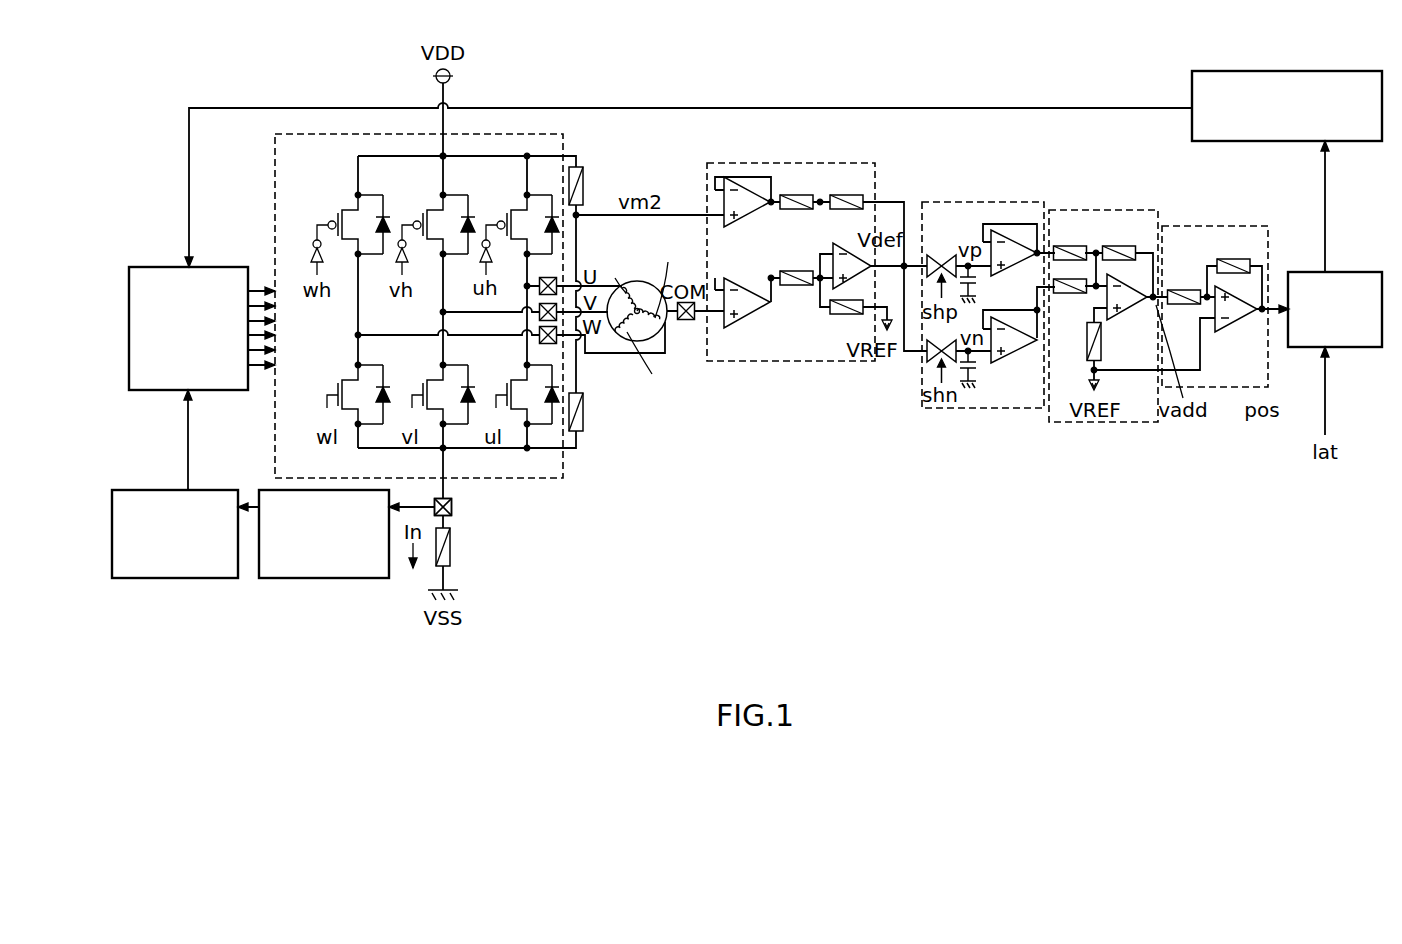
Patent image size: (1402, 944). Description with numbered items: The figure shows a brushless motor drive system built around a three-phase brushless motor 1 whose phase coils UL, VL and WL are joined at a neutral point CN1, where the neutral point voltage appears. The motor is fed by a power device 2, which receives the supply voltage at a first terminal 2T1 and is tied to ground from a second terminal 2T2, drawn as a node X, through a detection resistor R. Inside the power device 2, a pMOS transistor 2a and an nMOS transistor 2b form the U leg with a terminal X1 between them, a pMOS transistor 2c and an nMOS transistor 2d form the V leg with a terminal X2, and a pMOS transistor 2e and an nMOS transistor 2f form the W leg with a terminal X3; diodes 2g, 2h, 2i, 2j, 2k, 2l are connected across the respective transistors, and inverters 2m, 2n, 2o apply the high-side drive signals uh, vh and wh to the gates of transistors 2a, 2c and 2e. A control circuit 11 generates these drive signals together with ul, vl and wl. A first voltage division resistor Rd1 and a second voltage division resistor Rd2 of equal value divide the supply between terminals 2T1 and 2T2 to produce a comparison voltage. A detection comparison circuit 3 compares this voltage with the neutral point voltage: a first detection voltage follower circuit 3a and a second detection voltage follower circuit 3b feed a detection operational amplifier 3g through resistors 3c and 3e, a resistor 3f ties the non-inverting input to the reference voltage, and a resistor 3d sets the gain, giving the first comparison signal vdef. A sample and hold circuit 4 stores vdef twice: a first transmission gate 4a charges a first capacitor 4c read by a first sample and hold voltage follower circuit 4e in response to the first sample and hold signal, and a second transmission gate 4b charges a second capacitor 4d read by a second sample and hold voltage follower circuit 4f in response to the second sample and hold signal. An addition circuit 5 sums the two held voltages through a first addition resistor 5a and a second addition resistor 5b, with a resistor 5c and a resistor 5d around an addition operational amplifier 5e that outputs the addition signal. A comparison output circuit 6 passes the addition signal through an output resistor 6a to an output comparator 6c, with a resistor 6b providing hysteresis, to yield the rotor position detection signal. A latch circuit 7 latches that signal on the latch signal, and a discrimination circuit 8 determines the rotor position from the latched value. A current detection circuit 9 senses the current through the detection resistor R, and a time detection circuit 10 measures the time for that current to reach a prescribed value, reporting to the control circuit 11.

The three-phase brushless motor 1 is at (640, 281).
The power device 2 is at (565, 139).
The pMOS transistor 2a is at (512, 243).
The nMOS transistor 2b is at (513, 410).
The pMOS transistor 2c is at (428, 243).
The nMOS transistor 2d is at (430, 410).
The pMOS transistor 2e is at (345, 242).
The nMOS transistor 2f is at (345, 410).
The diode 2g is at (552, 217).
The diode 2h is at (552, 387).
The diode 2i is at (468, 217).
The diode 2j is at (468, 387).
The diode 2k is at (383, 217).
The diode 2l is at (383, 387).
The inverter 2m is at (484, 272).
The inverter 2n is at (400, 272).
The inverter 2o is at (315, 272).
The first terminal 2T1 is at (446, 153).
The second terminal 2T2 is at (446, 455).
The detection comparison circuit 3 is at (860, 163).
The first detection voltage follower circuit 3a is at (745, 177).
The second detection voltage follower circuit 3b is at (745, 328).
The resistor 3c is at (792, 195).
The resistor 3d is at (845, 195).
The resistor 3e is at (795, 285).
The resistor 3f is at (845, 314).
The detection operational amplifier 3g is at (833, 258).
The sample and hold circuit 4 is at (1035, 202).
The first transmission gate 4a is at (948, 256).
The second transmission gate 4b is at (928, 358).
The first capacitor 4c is at (978, 280).
The second capacitor 4d is at (978, 366).
The first sample and hold voltage follower circuit 4e is at (1005, 230).
The second sample and hold voltage follower circuit 4f is at (1025, 363).
The addition circuit 5 is at (1147, 210).
The first addition resistor 5a is at (1070, 246).
The second addition resistor 5b is at (1065, 294).
The resistor 5c is at (1117, 246).
The resistor 5d is at (1101, 352).
The addition operational amplifier 5e is at (1130, 310).
The comparison output circuit 6 is at (1250, 226).
The output resistor 6a is at (1182, 290).
The resistor 6b is at (1232, 259).
The output comparator 6c is at (1232, 332).
The latch circuit 7 is at (1348, 272).
The discrimination circuit 8 is at (1325, 71).
The current detection circuit 9 is at (325, 578).
The time detection circuit 10 is at (160, 490).
The control circuit 11 is at (160, 267).
The first voltage division resistor Rd1 is at (583, 175).
The second voltage division resistor Rd2 is at (583, 412).
The detection resistor R is at (452, 550).
The connection terminal X is at (455, 512).
The terminal X1 is at (557, 280).
The terminal X2 is at (558, 320).
The terminal X3 is at (558, 342).
The neutral point CN1 is at (689, 322).